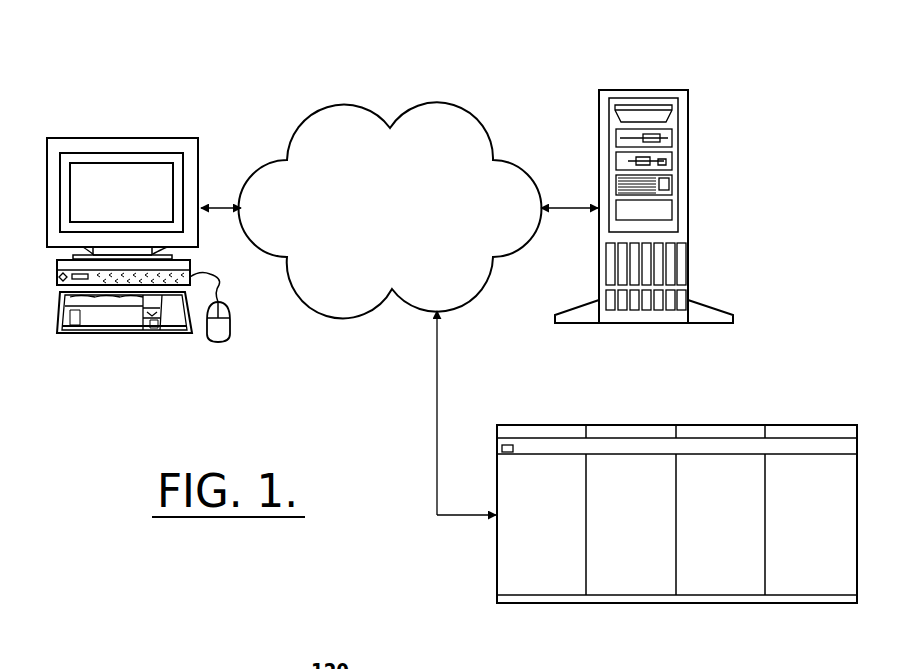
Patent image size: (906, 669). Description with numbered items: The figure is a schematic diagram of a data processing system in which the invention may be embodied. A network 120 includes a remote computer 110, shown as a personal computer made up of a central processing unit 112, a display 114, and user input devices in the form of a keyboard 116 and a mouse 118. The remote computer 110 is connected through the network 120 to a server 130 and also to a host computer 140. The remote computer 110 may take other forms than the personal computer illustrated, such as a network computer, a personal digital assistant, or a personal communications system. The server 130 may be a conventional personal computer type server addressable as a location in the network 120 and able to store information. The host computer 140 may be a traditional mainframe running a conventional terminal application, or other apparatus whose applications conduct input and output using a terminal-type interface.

The remote computer 110 is at (120, 62).
The central processing unit 112 is at (62, 286).
The display 114 is at (160, 174).
The keyboard 116 is at (100, 322).
The mouse 118 is at (216, 343).
The network 120 is at (366, 108).
The server 130 is at (652, 90).
The host computer 140 is at (600, 425).